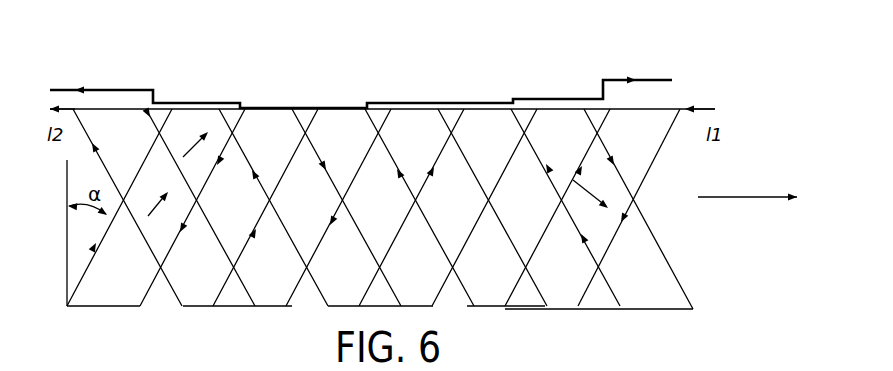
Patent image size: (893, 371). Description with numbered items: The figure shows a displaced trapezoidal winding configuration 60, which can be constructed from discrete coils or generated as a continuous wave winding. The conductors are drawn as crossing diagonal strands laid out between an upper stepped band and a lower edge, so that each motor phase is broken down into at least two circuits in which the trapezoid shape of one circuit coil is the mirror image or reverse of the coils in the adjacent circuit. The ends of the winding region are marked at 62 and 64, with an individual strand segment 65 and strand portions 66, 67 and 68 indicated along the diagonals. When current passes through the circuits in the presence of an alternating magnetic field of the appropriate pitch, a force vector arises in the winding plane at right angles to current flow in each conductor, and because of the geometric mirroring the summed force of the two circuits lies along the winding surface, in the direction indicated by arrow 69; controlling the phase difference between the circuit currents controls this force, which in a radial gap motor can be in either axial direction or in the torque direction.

The displaced trapezoidal winding configuration 60 is at (302, 86).
The right end of winding line 62 is at (708, 107).
The left end of winding line 64 is at (52, 107).
The strand segment 65 is at (684, 192).
The strand direction arrow 66 is at (588, 193).
The strand direction arrow 67 is at (148, 216).
The strand turnaround 68 is at (183, 158).
The feed direction arrow 69 is at (747, 197).